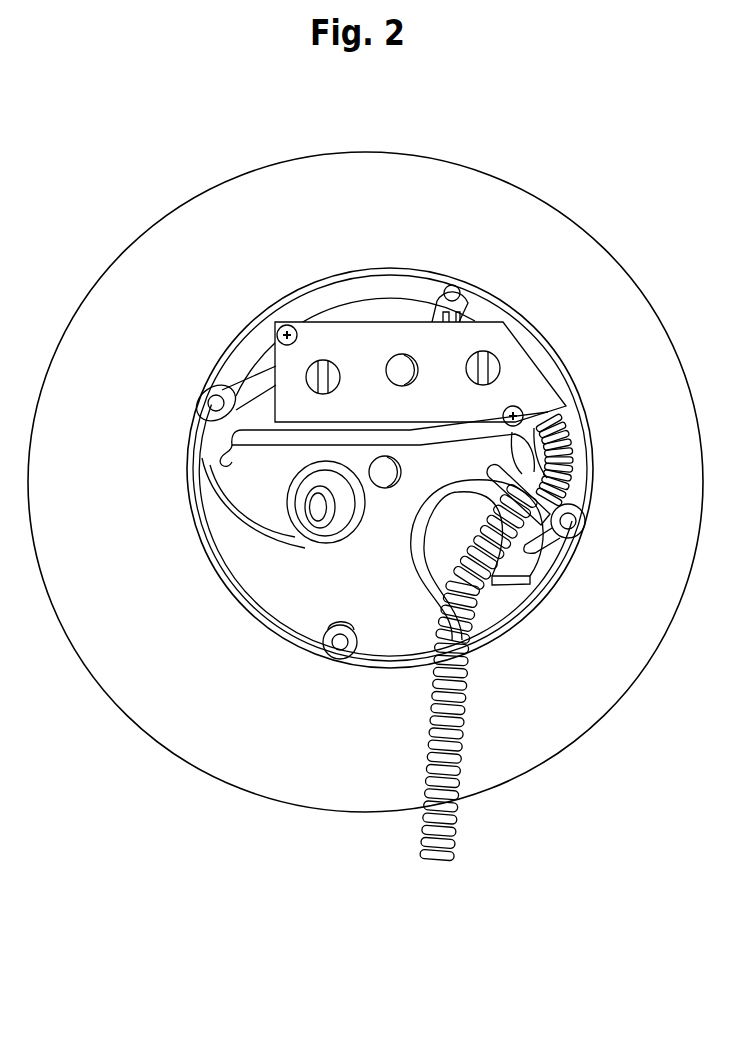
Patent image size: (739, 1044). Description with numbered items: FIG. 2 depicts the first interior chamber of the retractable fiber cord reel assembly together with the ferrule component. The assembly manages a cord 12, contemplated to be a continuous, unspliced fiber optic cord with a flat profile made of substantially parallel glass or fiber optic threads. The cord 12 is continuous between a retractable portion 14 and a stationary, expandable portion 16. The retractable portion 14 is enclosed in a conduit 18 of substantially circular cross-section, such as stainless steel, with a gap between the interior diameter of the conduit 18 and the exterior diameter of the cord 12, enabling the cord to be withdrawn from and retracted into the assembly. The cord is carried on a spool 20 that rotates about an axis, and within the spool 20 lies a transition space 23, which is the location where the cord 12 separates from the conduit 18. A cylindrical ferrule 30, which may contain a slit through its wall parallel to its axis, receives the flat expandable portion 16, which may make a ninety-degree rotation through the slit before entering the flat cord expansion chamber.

The cord 12 is at (457, 742).
The retractable portion 14 is at (455, 785).
The stationary, expandable portion 16 is at (258, 385).
The conduit 18 is at (465, 677).
The spool 20 is at (398, 244).
The transition space 23 is at (357, 397).
The cylindrical ferrule 30 is at (345, 510).